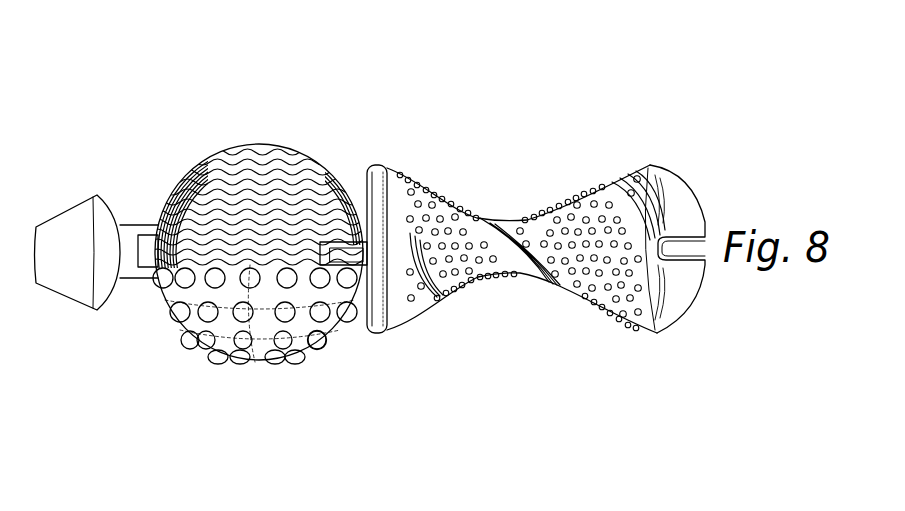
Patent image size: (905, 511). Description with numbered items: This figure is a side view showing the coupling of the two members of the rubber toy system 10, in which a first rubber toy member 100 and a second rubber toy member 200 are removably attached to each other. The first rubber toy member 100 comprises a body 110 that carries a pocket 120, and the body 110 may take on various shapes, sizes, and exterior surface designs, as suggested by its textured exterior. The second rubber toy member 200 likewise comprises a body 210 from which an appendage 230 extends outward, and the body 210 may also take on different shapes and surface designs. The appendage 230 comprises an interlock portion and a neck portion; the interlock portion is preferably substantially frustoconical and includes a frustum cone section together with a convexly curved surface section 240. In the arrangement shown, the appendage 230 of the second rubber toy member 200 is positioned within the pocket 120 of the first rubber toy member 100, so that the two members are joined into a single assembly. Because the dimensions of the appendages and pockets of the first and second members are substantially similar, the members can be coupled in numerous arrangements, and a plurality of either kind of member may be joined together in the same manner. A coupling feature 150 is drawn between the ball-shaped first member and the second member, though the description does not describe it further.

The rubber toy system 10 is at (423, 92).
The first rubber toy member 100 is at (288, 127).
The body 110 is at (210, 148).
The pocket 120 is at (240, 340).
The connector 150 is at (350, 243).
The second rubber toy member 200 is at (605, 165).
The body 210 is at (483, 218).
The appendage 230 is at (315, 338).
The convexly curved surface section 240 is at (380, 331).